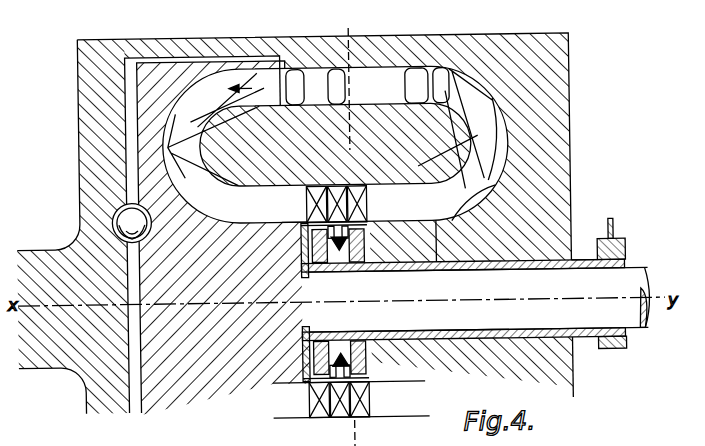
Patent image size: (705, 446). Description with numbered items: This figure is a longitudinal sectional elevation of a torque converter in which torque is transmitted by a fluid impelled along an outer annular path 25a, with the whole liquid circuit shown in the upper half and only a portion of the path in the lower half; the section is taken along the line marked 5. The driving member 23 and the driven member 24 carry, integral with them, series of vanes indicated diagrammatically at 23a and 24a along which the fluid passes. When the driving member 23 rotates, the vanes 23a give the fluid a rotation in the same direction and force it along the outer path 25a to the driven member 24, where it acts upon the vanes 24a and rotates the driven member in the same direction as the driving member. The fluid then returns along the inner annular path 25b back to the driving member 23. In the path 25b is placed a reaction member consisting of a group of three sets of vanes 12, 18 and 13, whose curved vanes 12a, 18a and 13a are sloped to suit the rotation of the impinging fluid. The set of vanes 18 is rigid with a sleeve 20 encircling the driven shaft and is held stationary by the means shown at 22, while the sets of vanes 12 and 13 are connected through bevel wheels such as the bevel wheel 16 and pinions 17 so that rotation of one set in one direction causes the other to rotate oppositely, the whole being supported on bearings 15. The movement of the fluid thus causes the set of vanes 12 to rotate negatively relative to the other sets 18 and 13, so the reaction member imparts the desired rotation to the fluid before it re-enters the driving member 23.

The driven member 24 is at (160, 72).
The vanes of the driven member 24a is at (217, 97).
The section line 5 is at (361, 228).
The outer annular path 25a is at (395, 80).
The driving member 23 is at (556, 88).
The vanes of the driving member 23a is at (442, 104).
The set of vanes 12 is at (313, 186).
The set of vanes 18 is at (341, 186).
The set of vanes 13 is at (364, 186).
The curved vanes 12a is at (308, 203).
The curved vanes 13a is at (372, 204).
The curved vanes 18a is at (309, 235).
The bearings 15 is at (303, 258).
The bevel wheel 16 is at (463, 300).
The pinion 17 is at (479, 299).
The inner annular path 25b is at (537, 298).
The sleeve 20 is at (545, 262).
The holding means 22 is at (612, 245).